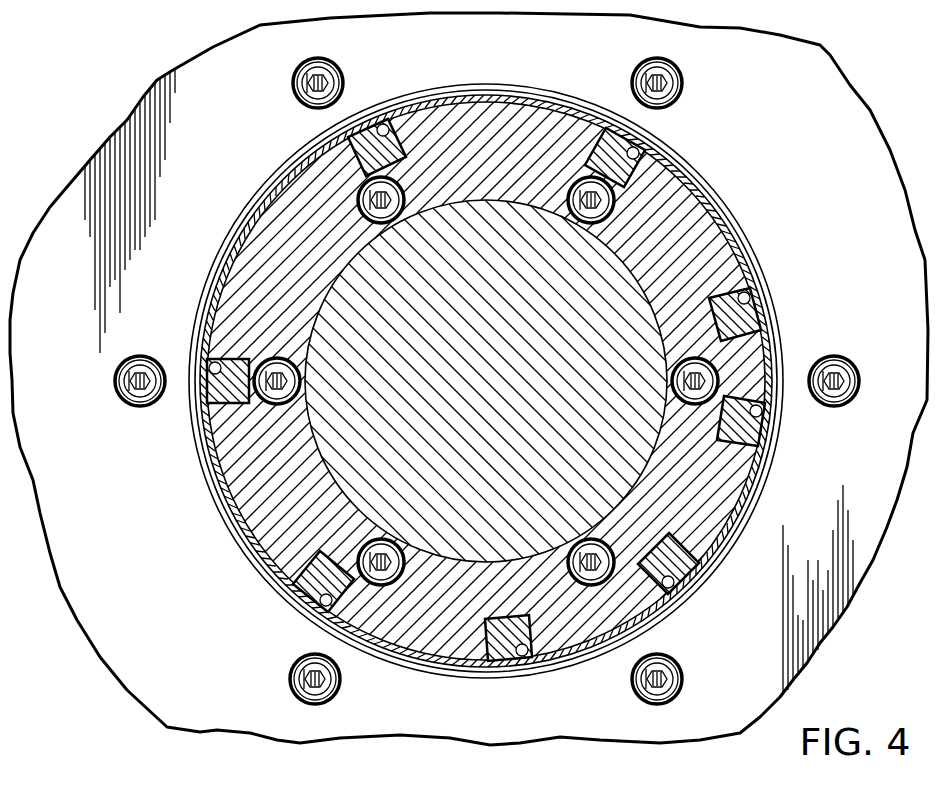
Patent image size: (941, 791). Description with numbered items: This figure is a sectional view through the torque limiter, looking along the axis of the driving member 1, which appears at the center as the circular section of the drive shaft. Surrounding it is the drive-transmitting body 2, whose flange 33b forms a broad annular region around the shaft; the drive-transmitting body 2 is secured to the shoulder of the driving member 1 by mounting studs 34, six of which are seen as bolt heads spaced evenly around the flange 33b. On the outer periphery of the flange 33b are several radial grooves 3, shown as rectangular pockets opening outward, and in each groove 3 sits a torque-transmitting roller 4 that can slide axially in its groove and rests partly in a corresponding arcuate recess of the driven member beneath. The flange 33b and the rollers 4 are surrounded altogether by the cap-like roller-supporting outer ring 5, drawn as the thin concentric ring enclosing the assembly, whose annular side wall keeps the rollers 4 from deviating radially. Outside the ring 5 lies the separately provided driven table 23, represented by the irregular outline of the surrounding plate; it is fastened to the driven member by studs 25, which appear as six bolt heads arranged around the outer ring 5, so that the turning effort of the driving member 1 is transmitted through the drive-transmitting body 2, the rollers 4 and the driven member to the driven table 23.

The driving member 1 is at (515, 235).
The drive-transmitting body 2 is at (484, 150).
The radial grooves 3 is at (388, 127).
The torque-transmitting rollers 4 is at (378, 140).
The roller-supporting outer ring 5 is at (735, 215).
The driven table 23 is at (845, 95).
The studs 25 is at (293, 86).
The flange 33b is at (262, 243).
The mounting studs 34 is at (365, 190).